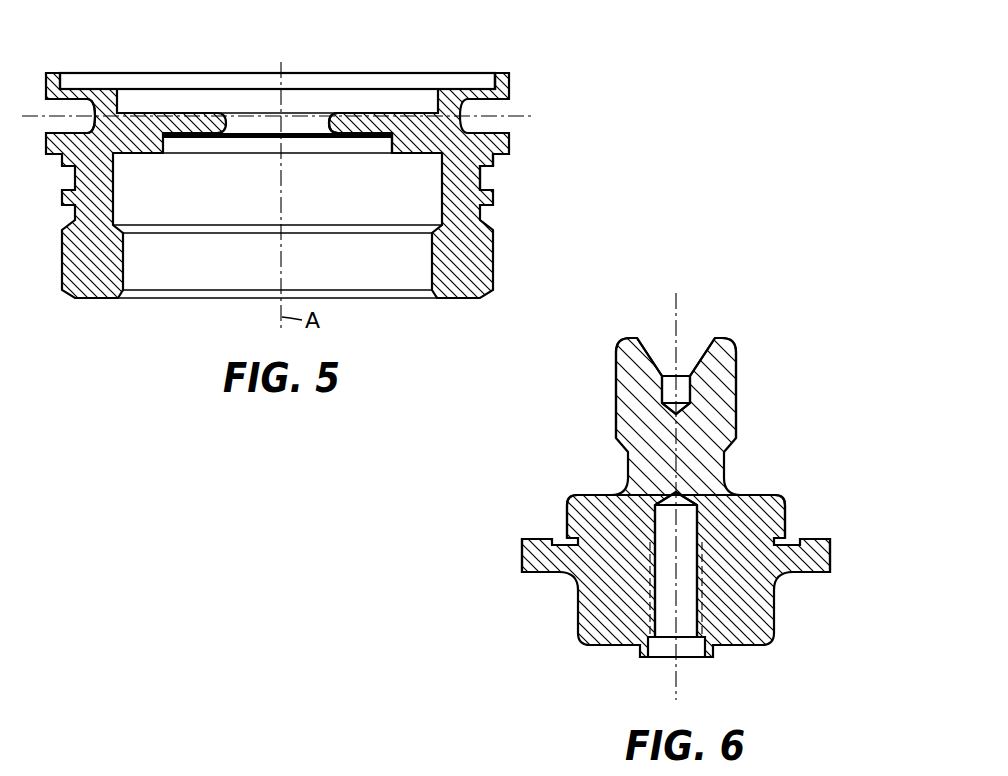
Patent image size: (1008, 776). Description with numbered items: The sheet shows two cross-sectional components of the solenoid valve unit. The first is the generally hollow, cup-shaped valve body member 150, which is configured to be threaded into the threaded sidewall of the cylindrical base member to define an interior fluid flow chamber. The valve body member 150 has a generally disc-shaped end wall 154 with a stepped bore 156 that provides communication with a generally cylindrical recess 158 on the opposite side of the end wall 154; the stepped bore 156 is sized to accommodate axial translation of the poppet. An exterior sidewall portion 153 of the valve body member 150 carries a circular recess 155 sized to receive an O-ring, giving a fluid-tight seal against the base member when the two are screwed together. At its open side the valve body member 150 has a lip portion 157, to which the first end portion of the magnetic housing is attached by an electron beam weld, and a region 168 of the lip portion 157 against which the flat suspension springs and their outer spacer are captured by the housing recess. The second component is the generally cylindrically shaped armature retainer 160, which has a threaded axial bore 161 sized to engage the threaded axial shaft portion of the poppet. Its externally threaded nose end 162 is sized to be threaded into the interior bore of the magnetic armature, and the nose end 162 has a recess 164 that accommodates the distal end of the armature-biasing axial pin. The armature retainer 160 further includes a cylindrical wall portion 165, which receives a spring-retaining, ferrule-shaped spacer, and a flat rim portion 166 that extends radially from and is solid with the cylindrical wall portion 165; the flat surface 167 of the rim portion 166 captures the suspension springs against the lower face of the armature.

In FIG. 5, the valve body member 150 is at (489, 217).
In FIG. 5, the exterior sidewall portion 153 is at (496, 163).
In FIG. 5, the end wall 154 is at (413, 160).
In FIG. 5, the circular recess 155 is at (486, 181).
In FIG. 5, the stepped bore 156 is at (213, 146).
In FIG. 5, the lip portion 157 is at (90, 89).
In FIG. 5, the cylindrical recess 158 is at (368, 93).
In FIG. 5, the region of lip portion 168 is at (445, 93).
In FIG. 6, the armature retainer 160 is at (787, 617).
In FIG. 6, the threaded axial bore 161 is at (688, 623).
In FIG. 6, the nose end 162 is at (727, 405).
In FIG. 6, the recess 164 is at (692, 345).
In FIG. 6, the cylindrical wall portion 165 is at (787, 508).
In FIG. 6, the rim portion 166 is at (832, 552).
In FIG. 6, the flat surface 167 is at (536, 540).